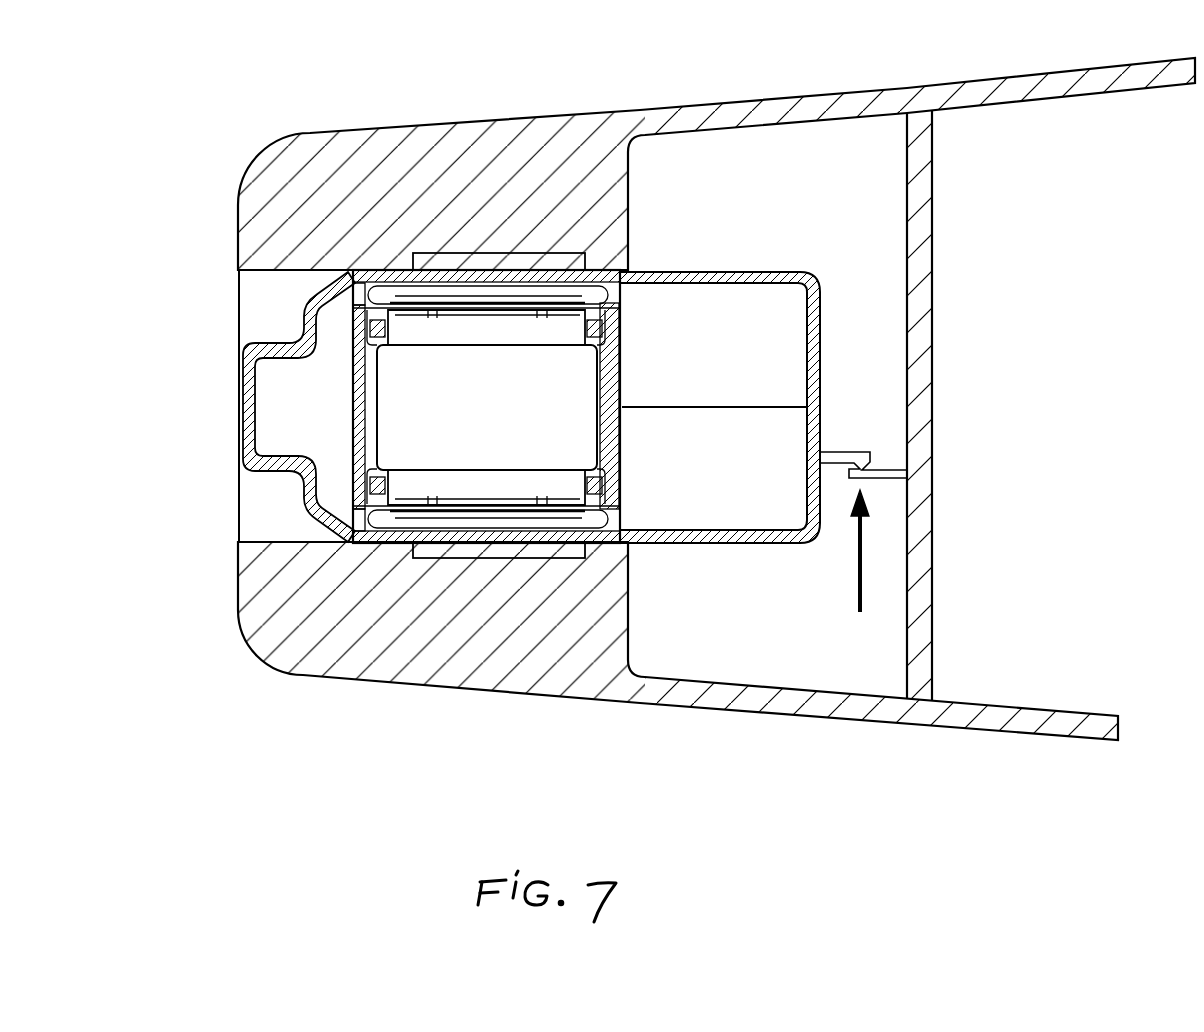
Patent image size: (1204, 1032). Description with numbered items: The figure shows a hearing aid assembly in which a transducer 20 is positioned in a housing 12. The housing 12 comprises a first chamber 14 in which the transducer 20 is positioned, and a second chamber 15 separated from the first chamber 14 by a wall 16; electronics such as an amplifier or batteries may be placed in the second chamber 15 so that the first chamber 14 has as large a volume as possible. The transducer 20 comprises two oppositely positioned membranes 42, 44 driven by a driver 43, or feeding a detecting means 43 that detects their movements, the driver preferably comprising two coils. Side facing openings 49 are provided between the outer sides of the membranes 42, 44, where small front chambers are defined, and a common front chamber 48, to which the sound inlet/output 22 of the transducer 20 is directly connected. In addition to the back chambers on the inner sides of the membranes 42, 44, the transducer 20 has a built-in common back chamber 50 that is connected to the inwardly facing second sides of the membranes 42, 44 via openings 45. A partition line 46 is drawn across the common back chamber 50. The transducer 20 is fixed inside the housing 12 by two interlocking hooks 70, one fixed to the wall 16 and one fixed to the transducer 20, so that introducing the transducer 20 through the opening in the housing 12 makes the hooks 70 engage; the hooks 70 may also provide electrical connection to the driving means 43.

The housing 12 is at (392, 145).
The first chamber 14 is at (838, 256).
The second chamber 15 is at (1090, 308).
The wall 16 is at (922, 186).
The transducer 20 is at (658, 266).
The sound inlet/output 22 is at (248, 405).
The membrane 42 is at (475, 305).
The driver 43 is at (505, 434).
The membrane 44 is at (497, 518).
The openings 45 is at (625, 344).
The partition line 46 is at (813, 410).
The common front chamber 48 is at (320, 434).
The side facing openings 49 is at (350, 289).
The common back chamber 50 is at (749, 390).
The interlocking hooks 70 is at (860, 574).